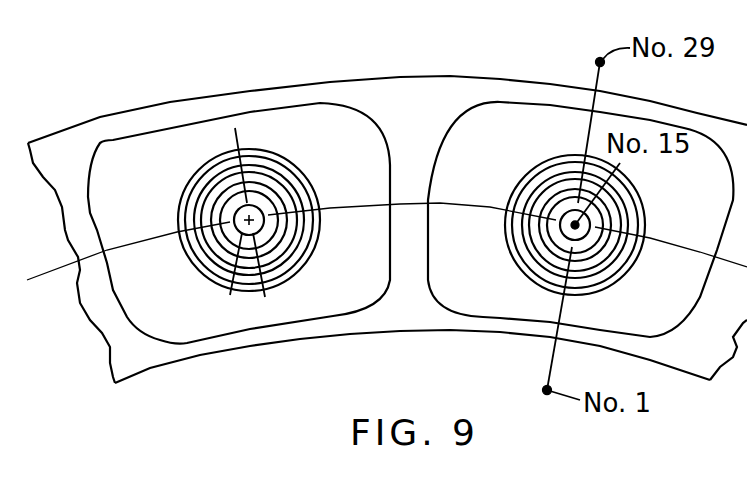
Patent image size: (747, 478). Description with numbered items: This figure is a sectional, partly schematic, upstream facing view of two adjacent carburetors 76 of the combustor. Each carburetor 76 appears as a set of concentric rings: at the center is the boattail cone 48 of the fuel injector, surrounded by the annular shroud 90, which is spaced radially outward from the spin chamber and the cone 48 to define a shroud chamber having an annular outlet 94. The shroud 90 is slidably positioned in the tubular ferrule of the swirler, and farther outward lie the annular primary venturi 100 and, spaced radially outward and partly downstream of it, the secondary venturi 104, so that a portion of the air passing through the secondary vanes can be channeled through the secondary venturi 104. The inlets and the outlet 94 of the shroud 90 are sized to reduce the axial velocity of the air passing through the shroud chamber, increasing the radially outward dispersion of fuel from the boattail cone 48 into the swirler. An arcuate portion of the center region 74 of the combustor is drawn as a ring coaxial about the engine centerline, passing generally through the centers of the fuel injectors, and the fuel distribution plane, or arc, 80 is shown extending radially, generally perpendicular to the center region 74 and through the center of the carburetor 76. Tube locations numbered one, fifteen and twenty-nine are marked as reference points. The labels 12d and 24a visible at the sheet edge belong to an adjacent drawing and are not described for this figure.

The center region 74 is at (50, 273).
The carburetor 76 is at (213, 157).
The fuel distribution plane 80 is at (602, 80).
The annular shroud 90 is at (282, 237).
The annular outlet 94 is at (223, 237).
The primary venturi 100 is at (296, 198).
The secondary venturi 104 is at (258, 152).
The boattail cone 48 is at (234, 229).
The segment 12d is at (133, 477).
The strap 24a is at (0, 470).